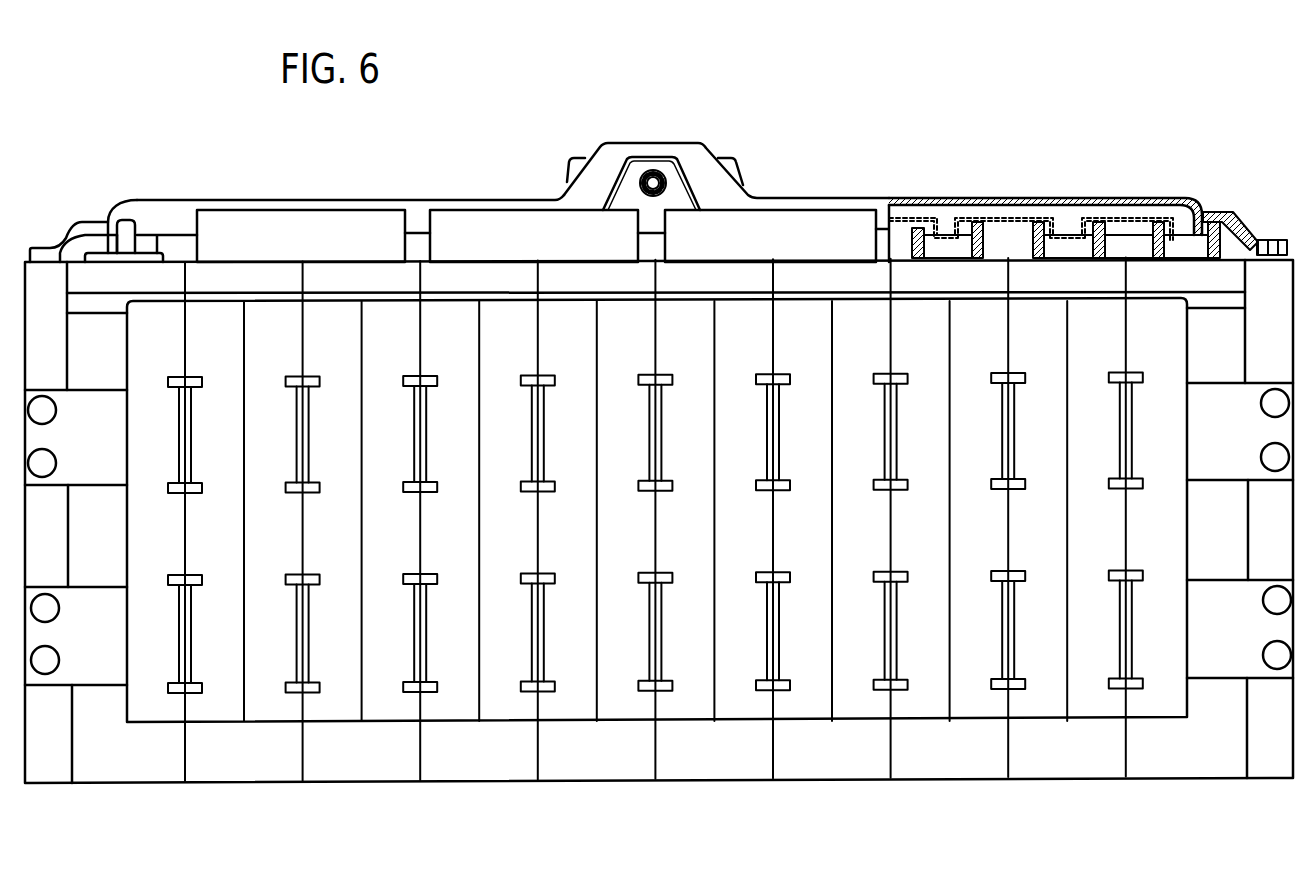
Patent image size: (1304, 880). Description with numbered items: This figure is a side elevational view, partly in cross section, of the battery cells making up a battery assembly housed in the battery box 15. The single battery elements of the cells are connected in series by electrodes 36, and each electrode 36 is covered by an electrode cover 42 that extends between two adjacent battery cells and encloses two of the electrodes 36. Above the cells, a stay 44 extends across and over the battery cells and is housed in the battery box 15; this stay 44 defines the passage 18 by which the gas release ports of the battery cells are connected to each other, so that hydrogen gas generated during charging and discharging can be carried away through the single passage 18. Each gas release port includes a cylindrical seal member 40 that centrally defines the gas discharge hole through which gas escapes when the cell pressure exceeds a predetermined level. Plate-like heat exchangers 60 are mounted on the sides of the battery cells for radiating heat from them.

The battery box 15 is at (107, 788).
The passage 18 is at (657, 170).
The electrode 36 is at (128, 228).
The cylindrical seal member 40 is at (1085, 245).
The electrode cover 42 is at (482, 222).
The stay 44 is at (720, 190).
The heat exchanger 60 is at (577, 708).